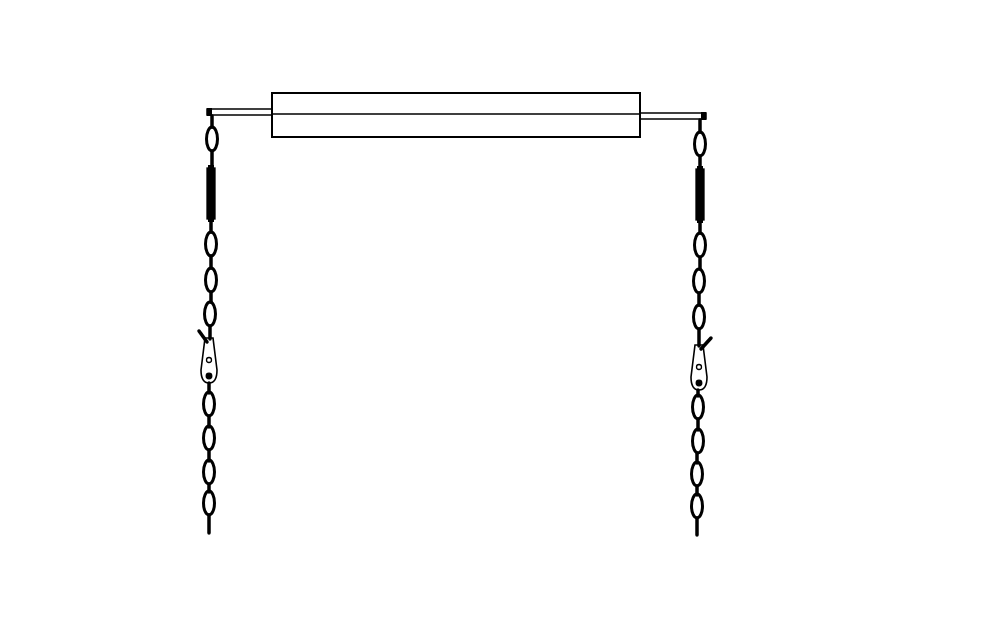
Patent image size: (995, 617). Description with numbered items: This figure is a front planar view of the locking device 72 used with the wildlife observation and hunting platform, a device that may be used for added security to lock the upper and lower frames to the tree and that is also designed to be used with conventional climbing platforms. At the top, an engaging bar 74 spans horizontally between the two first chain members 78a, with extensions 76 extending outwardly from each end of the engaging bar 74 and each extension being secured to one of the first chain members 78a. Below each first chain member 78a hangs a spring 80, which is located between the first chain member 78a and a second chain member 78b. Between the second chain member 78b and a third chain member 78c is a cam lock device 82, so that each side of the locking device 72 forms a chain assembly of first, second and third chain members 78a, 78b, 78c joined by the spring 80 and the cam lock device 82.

The locking device 72 is at (803, 98).
The engaging bar 74 is at (605, 110).
The extensions 76 is at (237, 108).
The first chain member 78a is at (205, 140).
The second chain member 78b is at (205, 280).
The third chain member 78c is at (203, 471).
The spring 80 is at (206, 194).
The cam lock device 82 is at (202, 368).